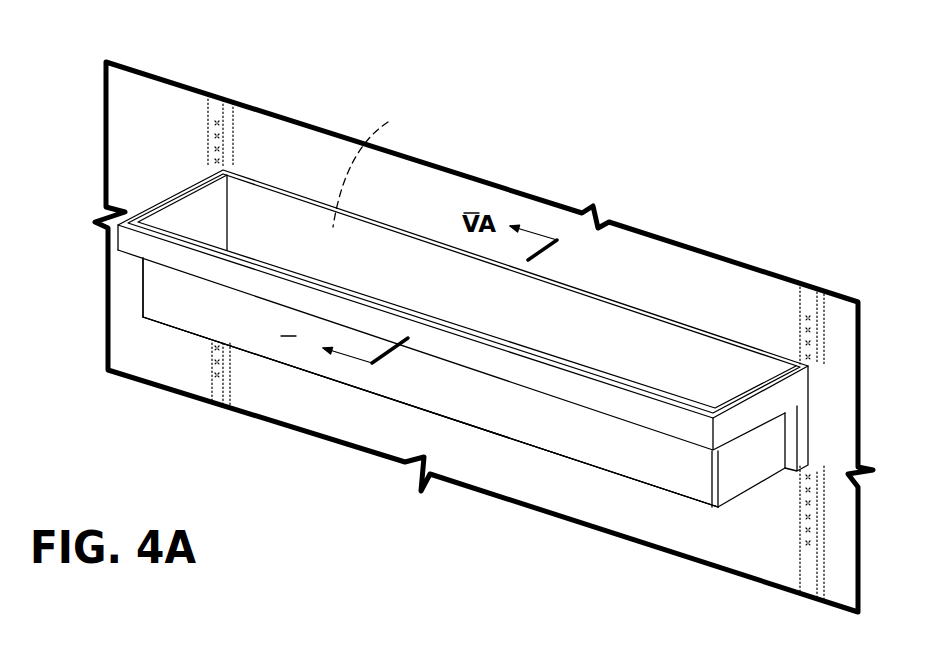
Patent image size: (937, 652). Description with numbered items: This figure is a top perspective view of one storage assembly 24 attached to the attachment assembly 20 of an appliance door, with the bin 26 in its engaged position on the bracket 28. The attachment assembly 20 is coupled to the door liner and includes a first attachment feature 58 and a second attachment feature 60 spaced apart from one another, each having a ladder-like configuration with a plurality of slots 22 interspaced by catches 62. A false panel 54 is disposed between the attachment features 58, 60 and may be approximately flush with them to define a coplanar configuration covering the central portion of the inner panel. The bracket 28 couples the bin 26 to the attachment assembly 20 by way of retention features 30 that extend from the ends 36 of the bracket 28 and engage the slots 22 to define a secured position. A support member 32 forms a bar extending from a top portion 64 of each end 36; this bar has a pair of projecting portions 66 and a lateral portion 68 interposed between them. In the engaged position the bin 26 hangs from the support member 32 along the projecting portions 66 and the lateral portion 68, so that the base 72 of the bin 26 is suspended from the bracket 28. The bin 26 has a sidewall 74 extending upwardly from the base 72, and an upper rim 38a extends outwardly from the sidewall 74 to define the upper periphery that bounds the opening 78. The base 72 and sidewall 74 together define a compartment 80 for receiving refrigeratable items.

The attachment assembly 20 is at (147, 152).
The slot 22 is at (212, 125).
The storage assembly 24 is at (388, 212).
The bin 26 is at (352, 368).
The bracket 28 is at (421, 338).
The retention feature 30 is at (817, 432).
The support member 32 is at (578, 407).
The end 36 is at (775, 425).
The upper rim 38a is at (152, 200).
The false panel 54 is at (622, 266).
The first attachment feature 58 is at (808, 292).
The second attachment feature 60 is at (218, 100).
The catch 62 is at (812, 527).
The top portion 64 is at (236, 167).
The projecting portion 66 is at (163, 195).
The lateral portion 68 is at (247, 278).
The base 72 is at (497, 436).
The sidewall 74 is at (143, 297).
The opening 78 is at (371, 161).
The compartment 80 is at (504, 312).